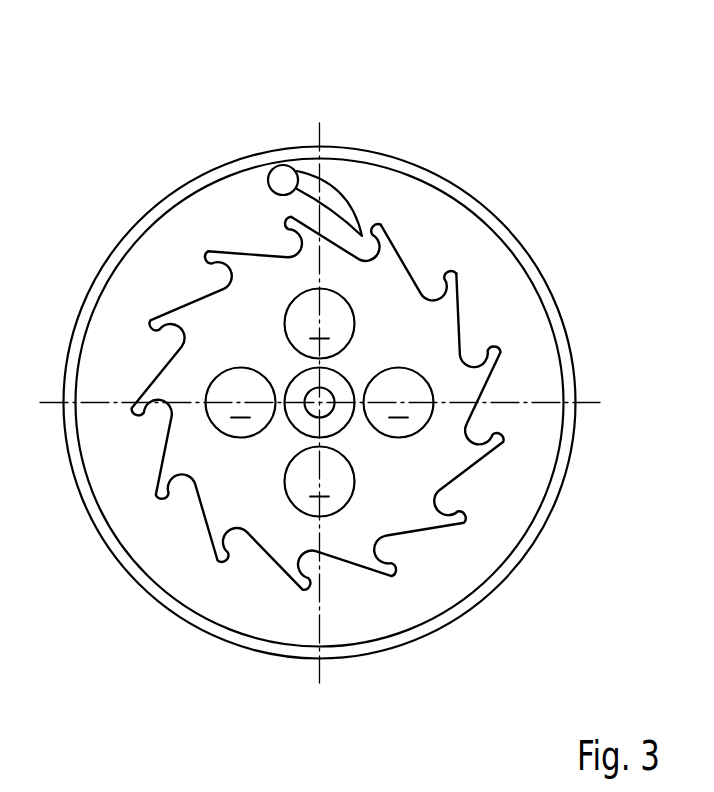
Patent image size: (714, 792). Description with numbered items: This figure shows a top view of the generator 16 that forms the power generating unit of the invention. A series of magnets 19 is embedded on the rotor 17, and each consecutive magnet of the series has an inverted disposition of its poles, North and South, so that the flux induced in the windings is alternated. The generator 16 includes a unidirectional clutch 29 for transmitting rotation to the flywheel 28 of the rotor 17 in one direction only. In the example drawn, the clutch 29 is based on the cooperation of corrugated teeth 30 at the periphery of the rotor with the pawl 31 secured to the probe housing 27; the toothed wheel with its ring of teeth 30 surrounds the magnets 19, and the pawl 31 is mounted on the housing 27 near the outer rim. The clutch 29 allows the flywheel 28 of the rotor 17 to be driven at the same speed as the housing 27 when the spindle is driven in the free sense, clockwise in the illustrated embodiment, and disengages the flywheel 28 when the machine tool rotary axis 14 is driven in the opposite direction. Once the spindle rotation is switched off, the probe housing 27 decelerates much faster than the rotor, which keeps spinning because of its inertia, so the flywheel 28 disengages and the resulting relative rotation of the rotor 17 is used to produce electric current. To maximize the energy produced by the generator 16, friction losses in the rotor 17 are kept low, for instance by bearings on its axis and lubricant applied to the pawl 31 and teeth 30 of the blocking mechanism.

The machine tool rotary axis 14 is at (312, 397).
The generator 16 is at (353, 605).
The rotor 17 is at (364, 390).
The magnets 19 is at (220, 413).
The probe housing 27 is at (172, 188).
The flywheel 28 is at (364, 390).
The unidirectional clutch 29 is at (236, 122).
The corrugated teeth 30 is at (432, 257).
The pawl 31 is at (332, 192).